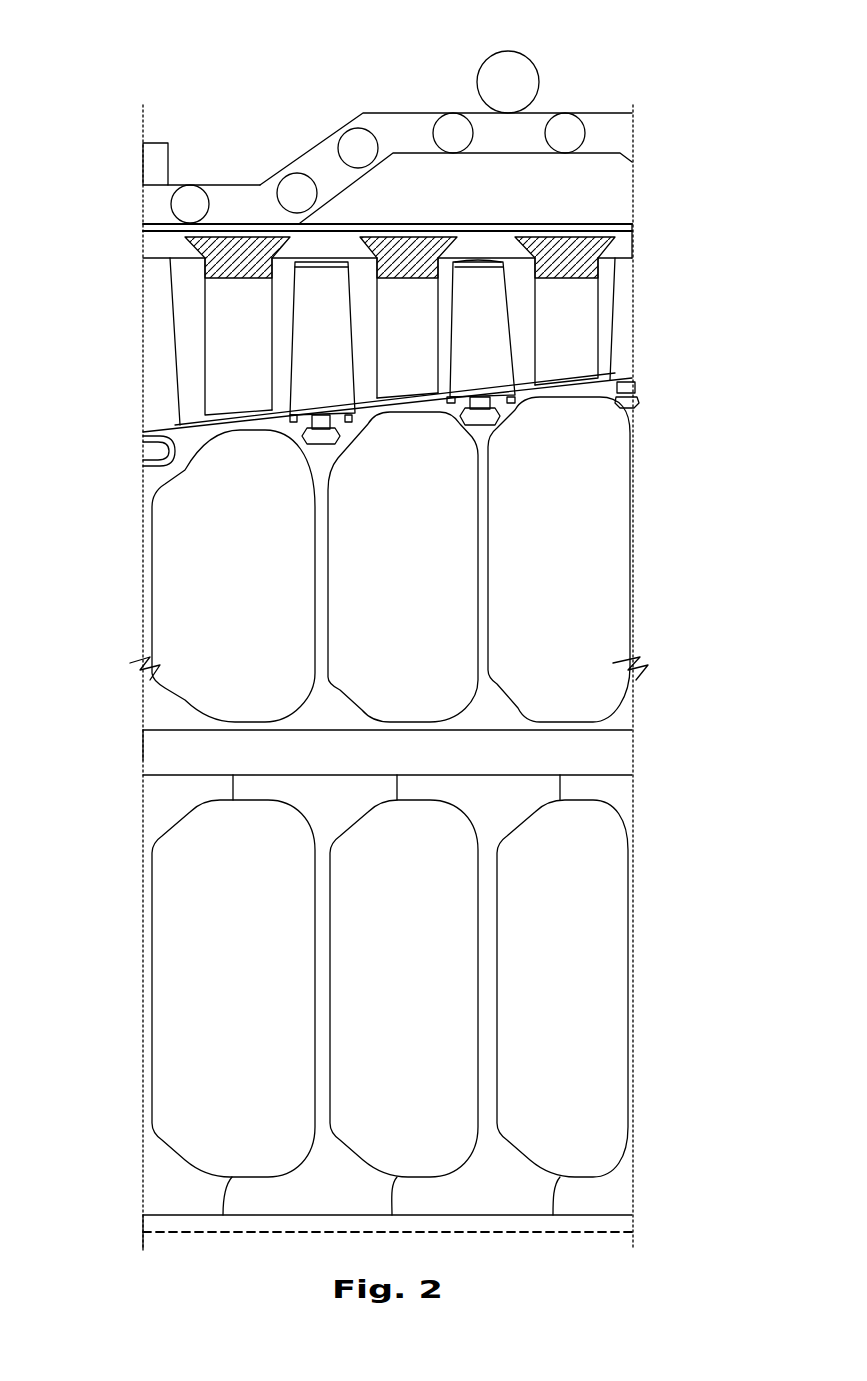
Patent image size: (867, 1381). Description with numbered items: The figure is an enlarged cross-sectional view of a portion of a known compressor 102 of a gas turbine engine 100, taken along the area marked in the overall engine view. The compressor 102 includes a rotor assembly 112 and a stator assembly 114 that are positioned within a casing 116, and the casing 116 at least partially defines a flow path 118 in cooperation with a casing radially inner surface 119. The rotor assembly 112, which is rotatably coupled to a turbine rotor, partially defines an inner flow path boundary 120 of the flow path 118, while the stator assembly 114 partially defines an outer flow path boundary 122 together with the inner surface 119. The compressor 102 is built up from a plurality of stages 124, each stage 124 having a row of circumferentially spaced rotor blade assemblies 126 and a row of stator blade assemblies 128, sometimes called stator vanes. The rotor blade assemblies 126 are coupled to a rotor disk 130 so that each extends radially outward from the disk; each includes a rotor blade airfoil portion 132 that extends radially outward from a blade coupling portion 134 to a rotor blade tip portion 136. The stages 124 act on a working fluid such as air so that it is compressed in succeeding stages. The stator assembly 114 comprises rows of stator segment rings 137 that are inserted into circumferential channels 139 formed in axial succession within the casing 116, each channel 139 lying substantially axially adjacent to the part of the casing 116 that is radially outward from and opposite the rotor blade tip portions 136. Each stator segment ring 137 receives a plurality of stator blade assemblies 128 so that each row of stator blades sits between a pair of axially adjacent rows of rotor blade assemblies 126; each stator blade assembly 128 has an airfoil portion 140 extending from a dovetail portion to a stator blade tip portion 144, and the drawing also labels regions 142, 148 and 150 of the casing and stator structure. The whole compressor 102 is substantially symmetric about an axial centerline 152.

The battery system 100 is at (90, 80).
The compressor 102 is at (229, 90).
The rotor assembly 112 is at (134, 1044).
The stator assembly 114 is at (363, 96).
The casing 116 is at (625, 245).
The flow path 118 is at (113, 277).
The casing radially inner surface 119 is at (160, 256).
The inner flow path boundary 120 is at (610, 373).
The outer flow path boundary 122 is at (455, 260).
The stage 124 is at (525, 167).
The rotor blade assembly 126 is at (364, 287).
The stator blade assembly 128 is at (514, 356).
The rotor disk 130 is at (315, 587).
The rotor blade airfoil portion 132 is at (343, 333).
The blade coupling portion 134 is at (180, 426).
The rotor blade tip portion 136 is at (150, 373).
The stator segment ring 137 is at (255, 250).
The channel 139 is at (570, 216).
The airfoil portion 140 is at (258, 352).
The insert 142 is at (405, 233).
The stator blade tip portion 144 is at (247, 430).
The cell block 148 is at (113, 334).
The side insert 150 is at (652, 278).
The axial centerline 152 is at (553, 1232).